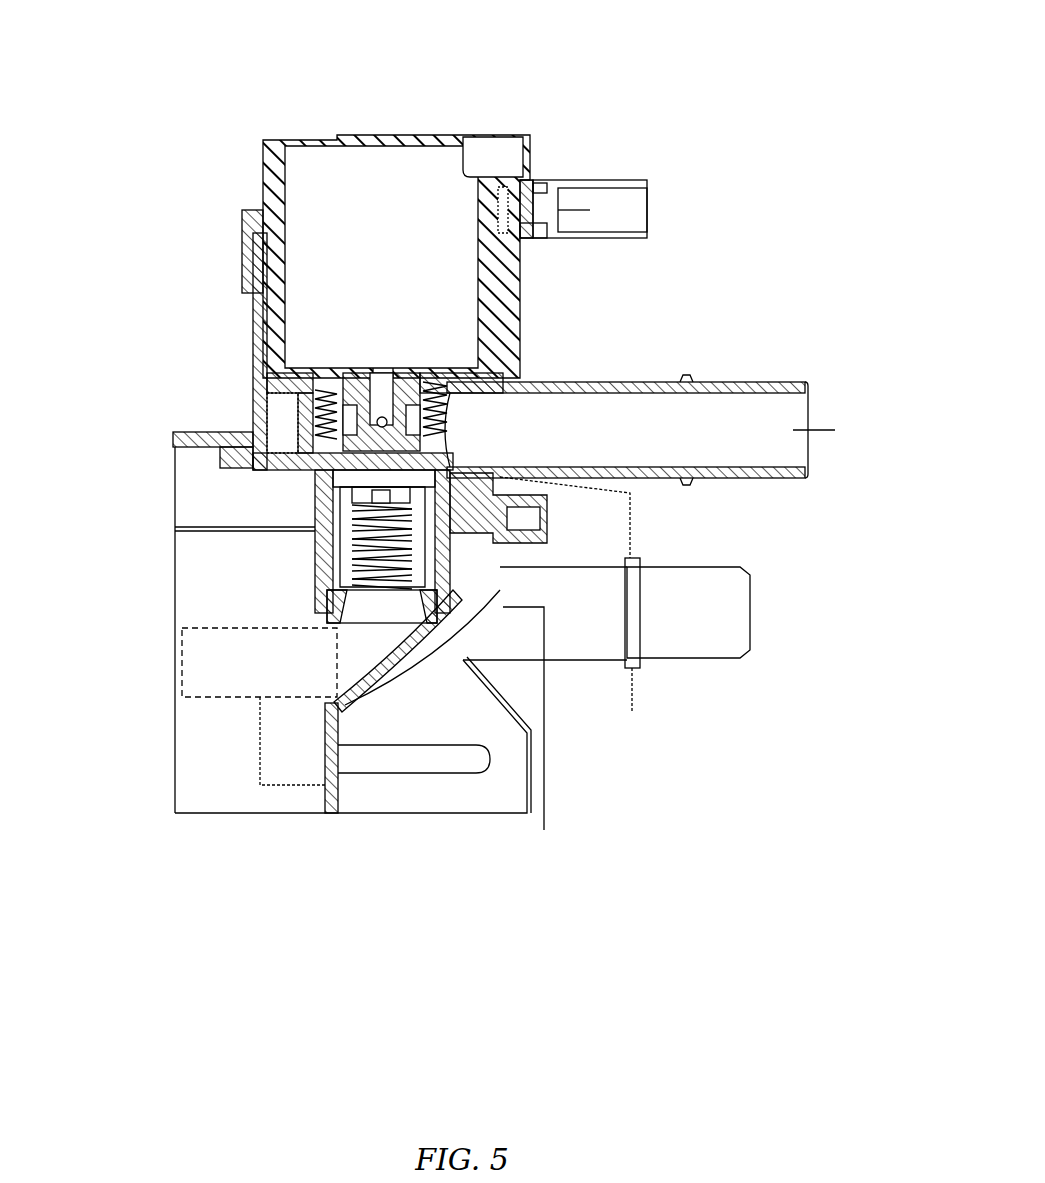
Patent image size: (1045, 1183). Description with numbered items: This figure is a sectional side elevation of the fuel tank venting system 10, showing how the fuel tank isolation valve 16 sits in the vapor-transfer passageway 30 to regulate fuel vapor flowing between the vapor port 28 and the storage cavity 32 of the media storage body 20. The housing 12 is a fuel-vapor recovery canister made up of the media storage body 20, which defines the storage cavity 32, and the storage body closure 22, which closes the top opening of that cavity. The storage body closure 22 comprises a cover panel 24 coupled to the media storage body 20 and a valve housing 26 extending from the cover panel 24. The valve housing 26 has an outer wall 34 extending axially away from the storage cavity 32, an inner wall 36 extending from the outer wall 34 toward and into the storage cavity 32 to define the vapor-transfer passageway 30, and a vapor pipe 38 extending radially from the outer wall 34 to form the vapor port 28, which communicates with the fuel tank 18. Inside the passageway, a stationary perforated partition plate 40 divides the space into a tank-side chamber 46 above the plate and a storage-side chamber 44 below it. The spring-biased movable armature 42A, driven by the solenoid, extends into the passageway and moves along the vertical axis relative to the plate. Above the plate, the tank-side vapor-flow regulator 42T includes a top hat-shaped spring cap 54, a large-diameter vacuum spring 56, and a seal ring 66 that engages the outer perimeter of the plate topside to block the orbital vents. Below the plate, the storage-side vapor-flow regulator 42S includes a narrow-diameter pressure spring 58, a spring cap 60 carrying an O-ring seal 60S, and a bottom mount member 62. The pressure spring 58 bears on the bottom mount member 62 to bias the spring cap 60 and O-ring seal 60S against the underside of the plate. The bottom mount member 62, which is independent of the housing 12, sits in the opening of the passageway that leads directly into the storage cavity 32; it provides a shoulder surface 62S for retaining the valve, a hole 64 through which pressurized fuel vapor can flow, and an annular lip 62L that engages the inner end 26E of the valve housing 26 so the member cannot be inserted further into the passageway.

The fuel tank venting system 10 is at (197, 63).
The housing 12 is at (78, 103).
The fuel tank isolation valve 16 is at (450, 355).
The fuel tank 18 is at (852, 500).
The media storage body 20 is at (382, 708).
The storage body closure 22 is at (45, 410).
The cover panel 24 is at (200, 430).
The valve housing 26 is at (300, 505).
The inner end 26E is at (445, 633).
The vapor port 28 is at (798, 410).
The vapor-transfer passageway 30 is at (710, 862).
The storage cavity 32 is at (175, 660).
The outer wall 34 is at (240, 440).
The inner wall 36 is at (253, 452).
The vapor pipe 38 is at (790, 377).
The perforated partition plate 40 is at (540, 523).
The movable armature 42A is at (253, 340).
The storage-side vapor-flow regulator 42S is at (452, 533).
The tank-side vapor-flow regulator 42T is at (455, 408).
The storage-side chamber 44 is at (750, 930).
The tank-side chamber 46 is at (760, 695).
The top hat-shaped spring cap 54 is at (320, 410).
The large-diameter compression (vacuum) spring 56 is at (510, 372).
The narrow-diameter compression (pressure) spring 58 is at (470, 653).
The spring cap 60 is at (347, 523).
The O-ring seal 60S is at (347, 500).
The bottom mount member 62 is at (338, 628).
The shoulder surface 62S is at (347, 588).
The annular lip 62L is at (327, 605).
The hole 64 is at (407, 650).
The seal ring 66 is at (347, 483).